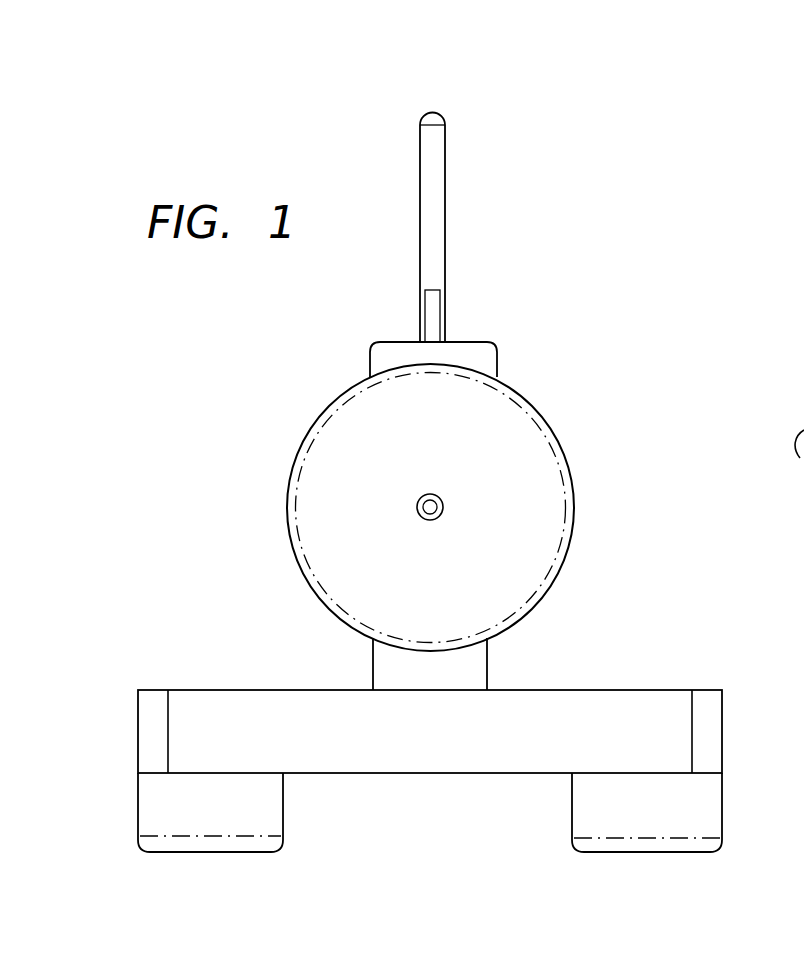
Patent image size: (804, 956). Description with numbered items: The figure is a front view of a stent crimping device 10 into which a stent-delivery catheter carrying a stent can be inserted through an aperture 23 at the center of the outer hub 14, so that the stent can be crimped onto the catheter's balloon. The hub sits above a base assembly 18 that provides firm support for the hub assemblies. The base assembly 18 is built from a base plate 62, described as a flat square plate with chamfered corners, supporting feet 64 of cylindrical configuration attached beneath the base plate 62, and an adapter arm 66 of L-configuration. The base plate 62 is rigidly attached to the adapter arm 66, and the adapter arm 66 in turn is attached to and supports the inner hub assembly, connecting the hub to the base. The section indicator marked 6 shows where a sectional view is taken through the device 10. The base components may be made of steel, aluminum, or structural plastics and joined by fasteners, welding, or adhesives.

The section line 6- 6 is at (432, 103).
The stent crimping device 10 is at (306, 360).
The outer hub 14 is at (572, 477).
The base assembly 18 is at (748, 712).
The aperture 23 is at (423, 496).
The base plate 62 is at (250, 688).
The supporting feet 64 is at (640, 853).
The adapter arm 66 is at (488, 672).